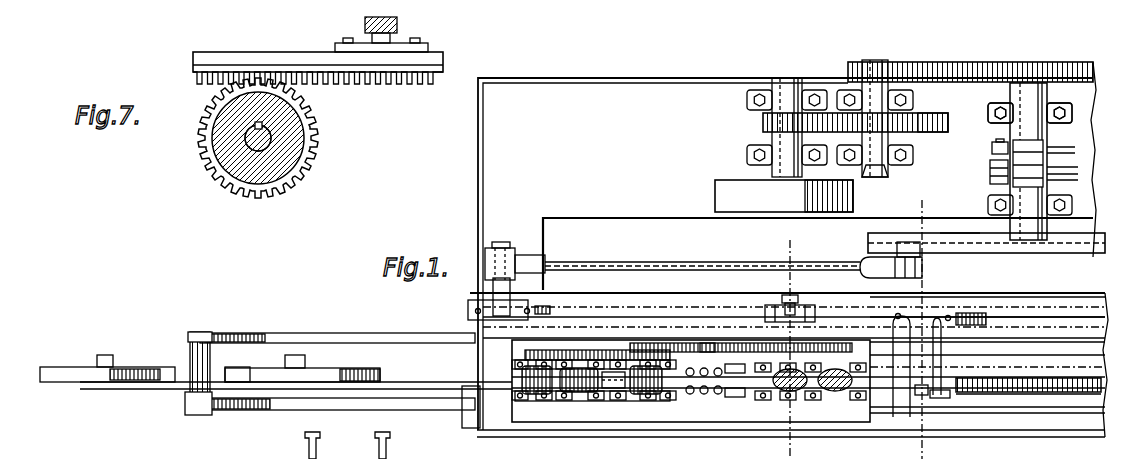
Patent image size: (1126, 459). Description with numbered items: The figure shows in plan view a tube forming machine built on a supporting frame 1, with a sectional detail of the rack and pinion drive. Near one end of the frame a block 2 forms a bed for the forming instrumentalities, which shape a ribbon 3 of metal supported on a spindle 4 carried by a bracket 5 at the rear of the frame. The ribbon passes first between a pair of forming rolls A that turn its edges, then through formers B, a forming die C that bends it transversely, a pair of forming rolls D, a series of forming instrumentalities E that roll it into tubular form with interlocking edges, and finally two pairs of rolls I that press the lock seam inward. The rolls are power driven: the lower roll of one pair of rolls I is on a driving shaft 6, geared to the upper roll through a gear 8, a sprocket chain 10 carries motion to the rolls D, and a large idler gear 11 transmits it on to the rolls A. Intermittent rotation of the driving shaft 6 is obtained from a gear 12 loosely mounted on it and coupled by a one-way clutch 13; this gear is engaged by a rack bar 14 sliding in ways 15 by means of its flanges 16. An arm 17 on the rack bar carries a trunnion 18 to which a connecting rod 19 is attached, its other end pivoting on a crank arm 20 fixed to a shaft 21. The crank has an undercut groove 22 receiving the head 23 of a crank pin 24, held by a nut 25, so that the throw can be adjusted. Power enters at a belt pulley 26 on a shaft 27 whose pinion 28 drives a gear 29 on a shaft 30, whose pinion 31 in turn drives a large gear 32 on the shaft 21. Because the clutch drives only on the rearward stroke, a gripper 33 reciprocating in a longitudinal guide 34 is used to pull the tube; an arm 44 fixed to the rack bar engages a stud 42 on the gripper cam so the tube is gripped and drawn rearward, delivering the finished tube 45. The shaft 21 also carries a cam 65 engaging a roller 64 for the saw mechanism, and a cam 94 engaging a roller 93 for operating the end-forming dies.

In FIG. 1, the supporting frame 1 is at (575, 78).
In FIG. 1, the block 2 is at (475, 395).
In FIG. 1, the ribbon 3 is at (410, 381).
In FIG. 1, the spindle 4 is at (302, 356).
In FIG. 1, the bracket 5 is at (437, 421).
In FIG. 1, the driving shaft 6 is at (785, 300).
In FIG. 1, the gear 8 is at (540, 350).
In FIG. 1, the sprocket chain 10 is at (708, 343).
In FIG. 1, the idler gear 11 is at (580, 350).
In FIG. 7, the gear 12 is at (318, 145).
In FIG. 1, the gear 12 is at (812, 306).
In FIG. 7, the one-way clutch 13 is at (288, 173).
In FIG. 7, the rack bar 14 is at (243, 52).
In FIG. 1, the rack bar 14 is at (676, 343).
In FIG. 1, the ways 15 is at (1072, 310).
In FIG. 7, the flanges 16 is at (415, 66).
In FIG. 7, the arm 17 is at (398, 28).
In FIG. 1, the arm 17 is at (480, 296).
In FIG. 1, the trunnion 18 is at (515, 250).
In FIG. 1, the connecting rod 19 is at (700, 262).
In FIG. 1, the crank arm 20 is at (1010, 250).
In FIG. 1, the shaft 21 is at (1027, 130).
In FIG. 1, the undercut groove 22 is at (958, 233).
In FIG. 1, the head 23 is at (903, 233).
In FIG. 1, the crank pin 24 is at (868, 256).
In FIG. 1, the nut 25 is at (890, 278).
In FIG. 1, the belt pulley 26 is at (715, 196).
In FIG. 1, the shaft 27 is at (783, 78).
In FIG. 1, the pinion 28 is at (763, 123).
In FIG. 1, the gear 29 is at (935, 116).
In FIG. 1, the shaft 30 is at (882, 172).
In FIG. 1, the pinion 31 is at (871, 62).
In FIG. 1, the large gear 32 is at (968, 62).
In FIG. 1, the gripper 33 is at (940, 398).
In FIG. 1, the longitudinal guide 34 is at (1060, 378).
In FIG. 1, the stud 42 is at (920, 392).
In FIG. 1, the arm 44 is at (935, 350).
In FIG. 1, the finished tube 45 is at (1016, 394).
In FIG. 1, the roller 64 is at (992, 147).
In FIG. 1, the cam 65 is at (1040, 150).
In FIG. 1, the roller 93 is at (990, 173).
In FIG. 1, the cam 94 is at (1047, 170).
In FIG. 1, the forming rolls A is at (538, 396).
In FIG. 1, the formers B is at (576, 393).
In FIG. 1, the forming die C is at (612, 390).
In FIG. 1, the forming rolls D is at (645, 396).
In FIG. 1, the forming instrumentalities E is at (712, 396).
In FIG. 1, the rolls I is at (830, 392).